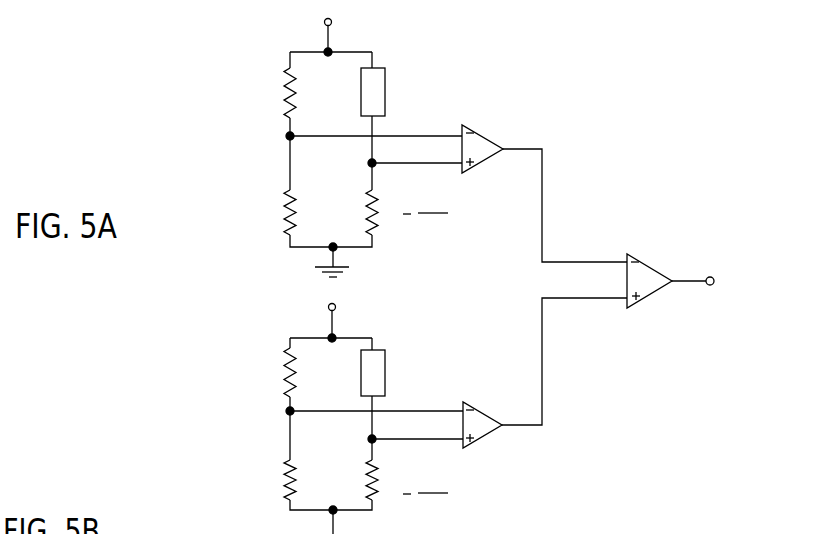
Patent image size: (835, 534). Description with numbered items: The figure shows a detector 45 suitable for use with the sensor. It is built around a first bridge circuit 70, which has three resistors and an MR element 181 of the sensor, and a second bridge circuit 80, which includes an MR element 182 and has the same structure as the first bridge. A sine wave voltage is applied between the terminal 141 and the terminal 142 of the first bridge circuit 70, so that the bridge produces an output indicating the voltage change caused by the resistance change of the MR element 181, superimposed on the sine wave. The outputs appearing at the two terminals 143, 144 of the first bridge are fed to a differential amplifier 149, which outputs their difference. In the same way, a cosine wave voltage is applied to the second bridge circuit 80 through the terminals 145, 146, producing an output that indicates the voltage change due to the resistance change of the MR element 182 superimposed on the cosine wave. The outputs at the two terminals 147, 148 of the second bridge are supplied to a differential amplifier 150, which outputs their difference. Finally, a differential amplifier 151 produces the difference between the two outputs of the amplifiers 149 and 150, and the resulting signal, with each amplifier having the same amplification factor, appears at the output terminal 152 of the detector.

The detector 45 is at (508, 79).
The first bridge circuit 70 is at (388, 50).
The second bridge circuit 80 is at (395, 338).
The terminal 141 is at (332, 21).
The terminal 142 is at (336, 250).
The terminal 143 is at (373, 165).
The terminal 144 is at (291, 139).
The terminal 145 is at (336, 306).
The terminal 146 is at (335, 513).
The terminal 147 is at (374, 442).
The terminal 148 is at (292, 414).
The differential amplifier 149 is at (483, 170).
The differential amplifier 150 is at (472, 445).
The differential amplifier 151 is at (640, 303).
The terminal 152 is at (711, 285).
The MR element 181 is at (385, 91).
The MR element 182 is at (385, 385).